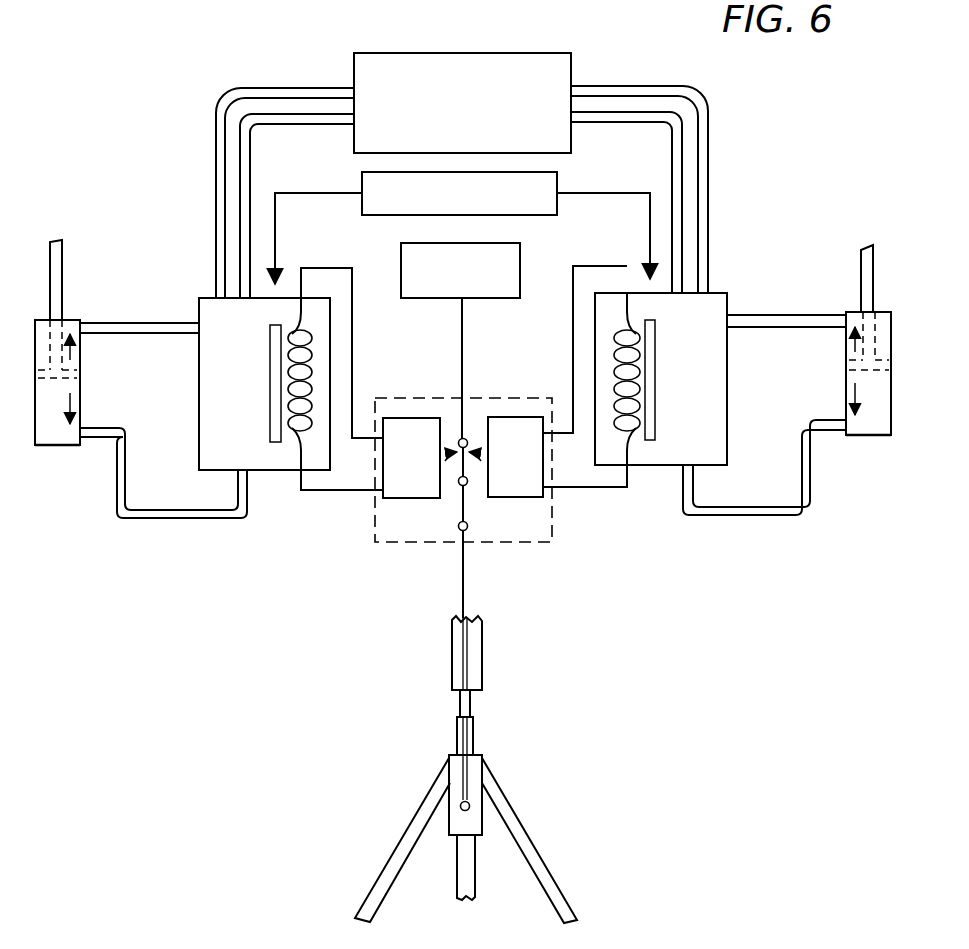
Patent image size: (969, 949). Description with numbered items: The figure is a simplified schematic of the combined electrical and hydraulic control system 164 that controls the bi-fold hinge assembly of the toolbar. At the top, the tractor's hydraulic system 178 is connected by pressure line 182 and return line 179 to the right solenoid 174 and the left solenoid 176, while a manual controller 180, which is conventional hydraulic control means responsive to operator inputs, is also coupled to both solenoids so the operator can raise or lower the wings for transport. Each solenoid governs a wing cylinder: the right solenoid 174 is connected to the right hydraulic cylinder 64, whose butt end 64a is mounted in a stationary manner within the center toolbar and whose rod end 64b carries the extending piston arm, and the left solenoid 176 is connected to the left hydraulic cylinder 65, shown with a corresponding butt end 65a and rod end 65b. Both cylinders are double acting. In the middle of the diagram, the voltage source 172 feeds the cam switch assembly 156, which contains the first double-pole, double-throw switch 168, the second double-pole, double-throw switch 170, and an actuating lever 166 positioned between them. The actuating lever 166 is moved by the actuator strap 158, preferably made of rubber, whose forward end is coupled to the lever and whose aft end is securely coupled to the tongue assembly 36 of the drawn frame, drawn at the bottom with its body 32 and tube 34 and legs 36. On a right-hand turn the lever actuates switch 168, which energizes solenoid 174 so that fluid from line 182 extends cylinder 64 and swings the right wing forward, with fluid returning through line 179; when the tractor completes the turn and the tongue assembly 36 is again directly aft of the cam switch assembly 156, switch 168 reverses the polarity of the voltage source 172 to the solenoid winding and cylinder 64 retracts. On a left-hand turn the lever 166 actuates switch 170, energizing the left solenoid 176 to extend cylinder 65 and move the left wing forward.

The combined electrical and hydraulic control system 164 is at (200, 112).
The pressure line 182 is at (316, 88).
The return line 179 is at (278, 127).
The tractor's hydraulic system 178 is at (500, 53).
The manual controller 180 is at (552, 170).
The voltage source 172 is at (520, 268).
The left solenoid 176 is at (276, 472).
The right solenoid 174 is at (660, 465).
The second double-pole, double-throw switch 170 is at (430, 372).
The first double-pole, double-throw switch 168 is at (517, 417).
The actuating lever 166 is at (463, 507).
The cam switch assembly 156 is at (487, 543).
The actuator strap 158 is at (465, 580).
The sensor body 32 is at (452, 645).
The sensor tube 34 is at (478, 726).
The tongue assembly 36 is at (524, 811).
The left hydraulic cylinder 65 is at (84, 351).
The left cylinder piston rod 65a is at (83, 318).
The left cylinder base end 65b is at (36, 446).
The right hydraulic cylinder 64 is at (844, 378).
The butt end 64a is at (896, 312).
The rod end 64b is at (918, 462).